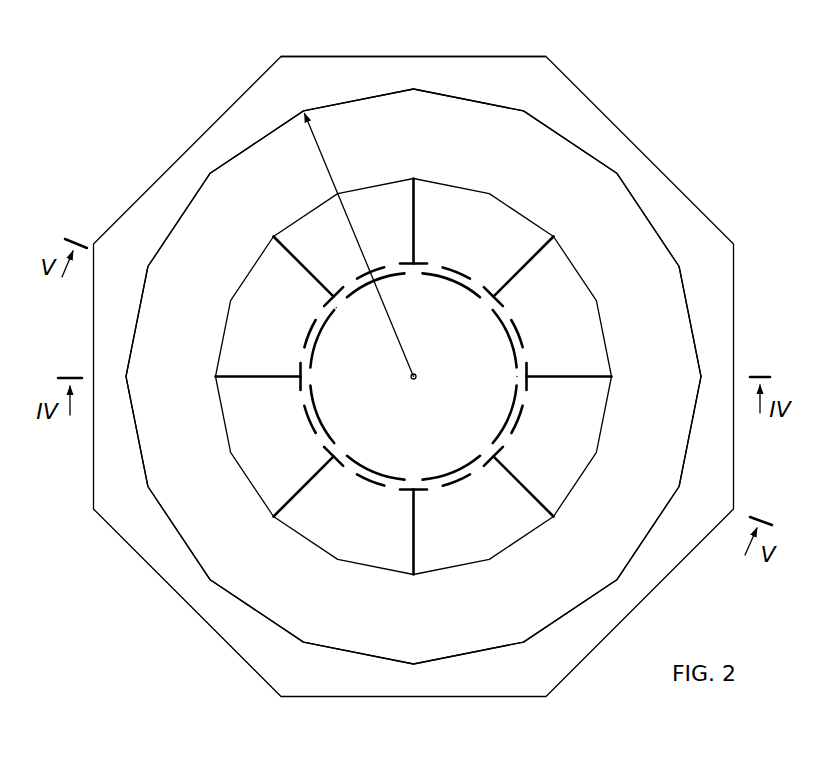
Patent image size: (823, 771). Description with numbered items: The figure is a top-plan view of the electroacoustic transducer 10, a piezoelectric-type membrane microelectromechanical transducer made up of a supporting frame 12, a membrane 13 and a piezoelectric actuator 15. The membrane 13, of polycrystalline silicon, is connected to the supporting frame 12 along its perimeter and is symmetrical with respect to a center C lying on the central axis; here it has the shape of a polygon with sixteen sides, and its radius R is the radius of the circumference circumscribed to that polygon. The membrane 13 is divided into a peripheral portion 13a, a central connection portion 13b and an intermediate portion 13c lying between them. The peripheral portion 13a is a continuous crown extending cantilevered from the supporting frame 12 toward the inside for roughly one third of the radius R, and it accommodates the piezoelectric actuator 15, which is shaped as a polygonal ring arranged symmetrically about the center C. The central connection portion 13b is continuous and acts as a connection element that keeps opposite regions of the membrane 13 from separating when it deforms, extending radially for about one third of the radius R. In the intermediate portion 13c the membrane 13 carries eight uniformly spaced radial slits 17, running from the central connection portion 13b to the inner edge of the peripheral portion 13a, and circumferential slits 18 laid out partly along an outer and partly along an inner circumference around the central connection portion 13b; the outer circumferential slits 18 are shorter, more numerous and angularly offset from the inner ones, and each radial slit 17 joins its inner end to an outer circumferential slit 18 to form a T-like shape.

The electroacoustic transducer 10 is at (153, 122).
The supporting frame 12 is at (345, 63).
The membrane 13 is at (557, 110).
The peripheral portion 13a is at (618, 240).
The central connection portion 13b is at (425, 408).
The intermediate portion 13c is at (575, 431).
The piezoelectric actuator 15 is at (212, 535).
The radial slits 17 is at (307, 262).
The circumferential slits 18 is at (376, 265).
The radius R is at (352, 175).
The center C is at (410, 376).